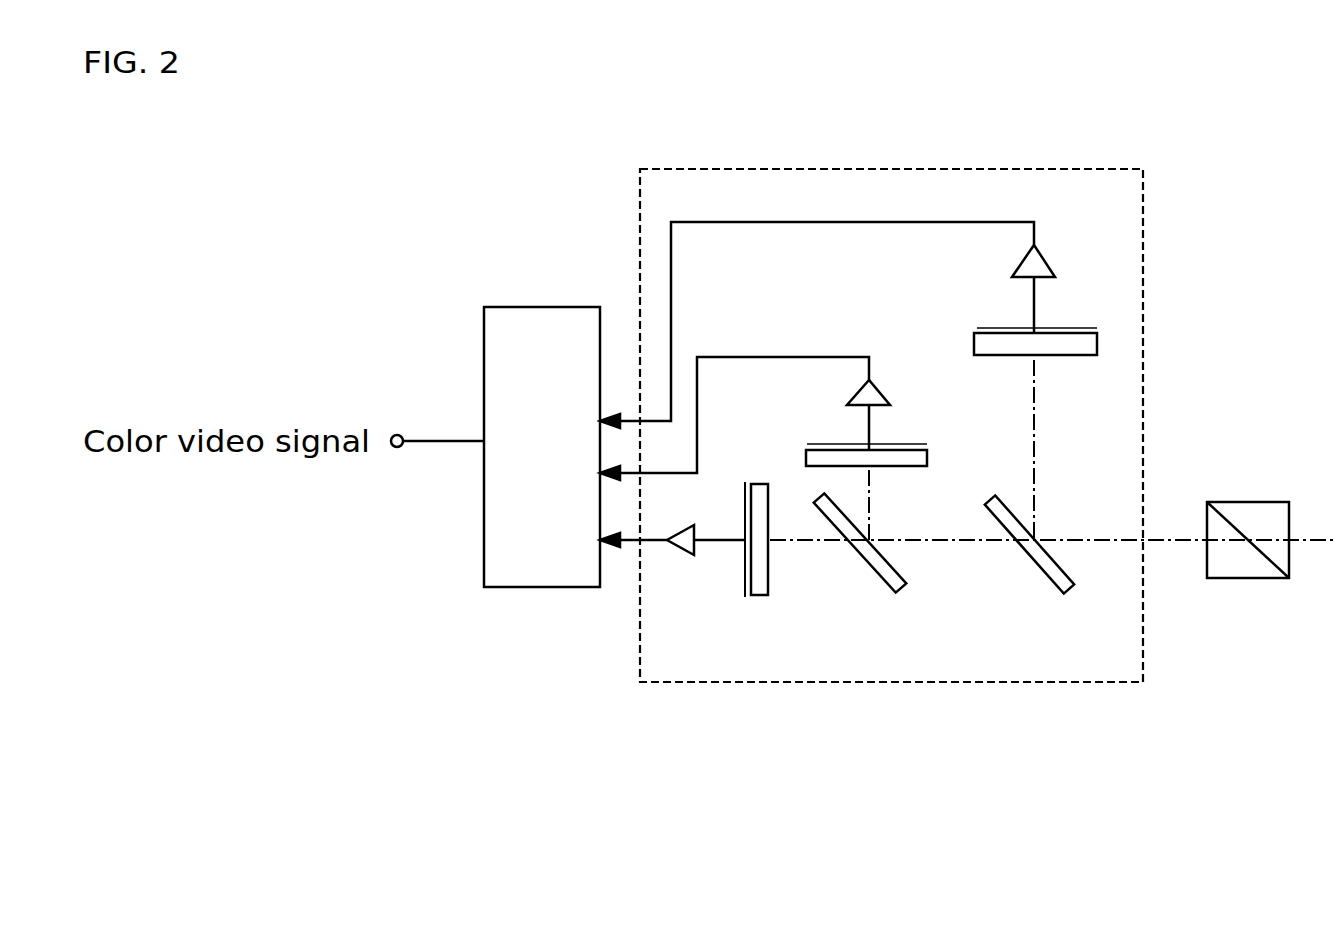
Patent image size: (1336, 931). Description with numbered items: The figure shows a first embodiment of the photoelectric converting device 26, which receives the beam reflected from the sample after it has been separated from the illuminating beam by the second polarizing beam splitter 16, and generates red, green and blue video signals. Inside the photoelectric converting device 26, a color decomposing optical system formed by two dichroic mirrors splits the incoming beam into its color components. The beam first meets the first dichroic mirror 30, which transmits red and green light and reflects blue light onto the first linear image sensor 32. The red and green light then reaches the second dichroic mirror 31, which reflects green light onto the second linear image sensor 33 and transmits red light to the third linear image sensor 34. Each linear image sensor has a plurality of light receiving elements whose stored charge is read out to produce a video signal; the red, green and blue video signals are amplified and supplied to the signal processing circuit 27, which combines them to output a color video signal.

The second polarizing beam splitter 16 is at (1278, 502).
The photoelectric converting device 26 is at (995, 169).
The signal processing circuit 27 is at (541, 309).
The first dichroic mirror 30 is at (1050, 585).
The second dichroic mirror 31 is at (878, 585).
The first linear image sensor 32 is at (1077, 334).
The second linear image sensor 33 is at (902, 444).
The third linear image sensor 34 is at (758, 597).